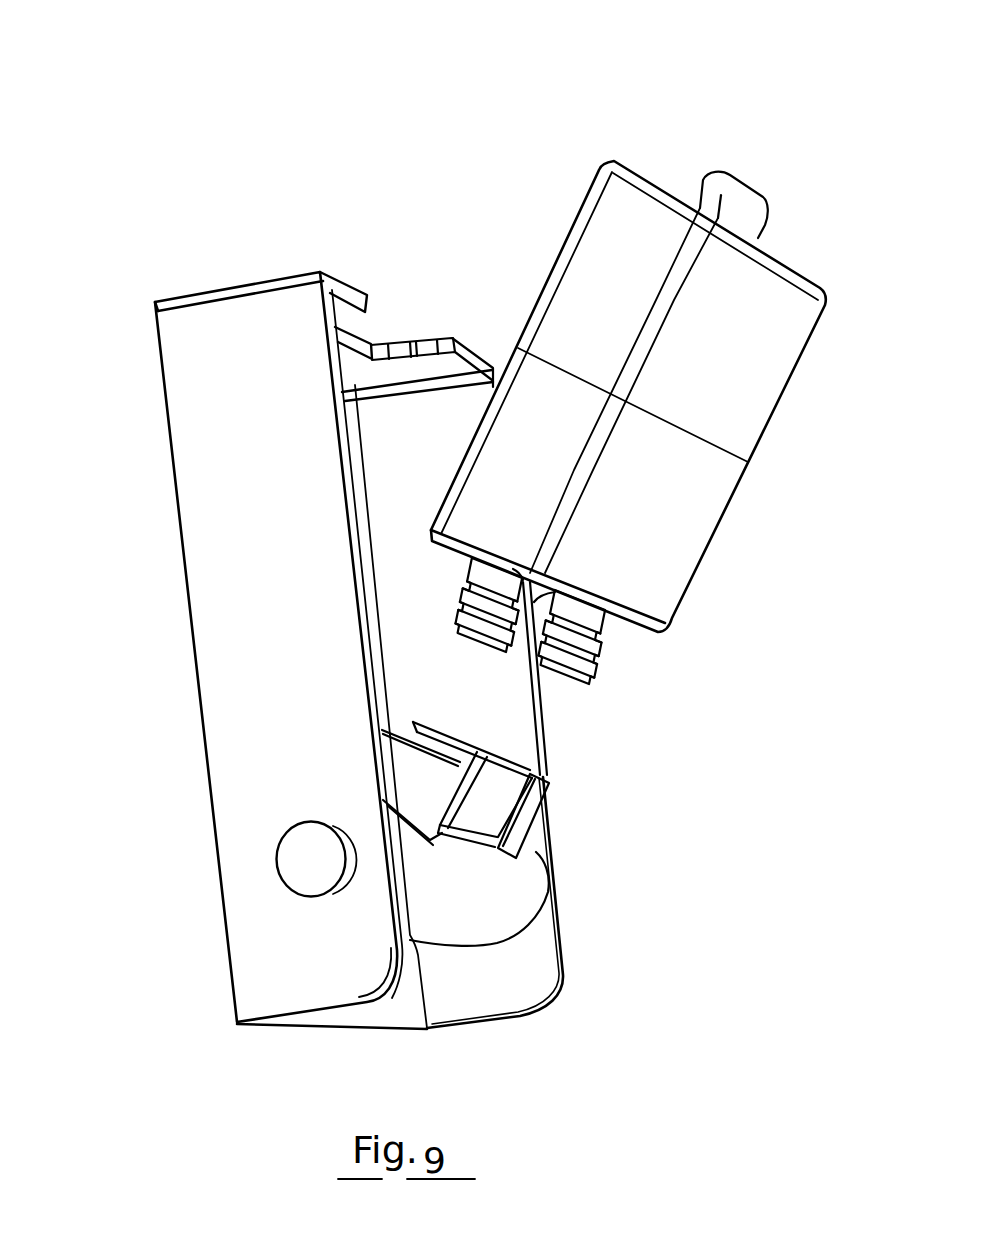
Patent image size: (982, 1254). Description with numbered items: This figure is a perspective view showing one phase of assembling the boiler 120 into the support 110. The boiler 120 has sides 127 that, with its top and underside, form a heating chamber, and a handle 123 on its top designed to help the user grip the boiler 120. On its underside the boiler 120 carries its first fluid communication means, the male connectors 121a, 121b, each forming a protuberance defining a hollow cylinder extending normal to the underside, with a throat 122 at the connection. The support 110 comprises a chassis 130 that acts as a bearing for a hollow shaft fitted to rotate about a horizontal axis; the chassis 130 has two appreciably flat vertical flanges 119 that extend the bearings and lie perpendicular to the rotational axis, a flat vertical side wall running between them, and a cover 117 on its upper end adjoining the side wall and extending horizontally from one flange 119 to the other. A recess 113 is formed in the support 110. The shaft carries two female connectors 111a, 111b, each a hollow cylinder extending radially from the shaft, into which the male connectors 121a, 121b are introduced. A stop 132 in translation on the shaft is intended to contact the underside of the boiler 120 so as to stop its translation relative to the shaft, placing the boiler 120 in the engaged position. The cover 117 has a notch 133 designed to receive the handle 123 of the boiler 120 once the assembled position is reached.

The support 110 is at (385, 599).
The female connector 111a is at (408, 778).
The female connector 111b is at (527, 805).
The recess 113 is at (520, 900).
The cover 117 is at (418, 358).
The flange 119 is at (223, 698).
The boiler 120 is at (631, 394).
The male connector 121a is at (530, 673).
The male connector 121b is at (607, 620).
The throat 122 is at (592, 650).
The handle 123 is at (738, 203).
The side 127 is at (738, 410).
The chassis 130 is at (432, 545).
The stop in translation 132 is at (487, 743).
The notch 133 is at (358, 333).